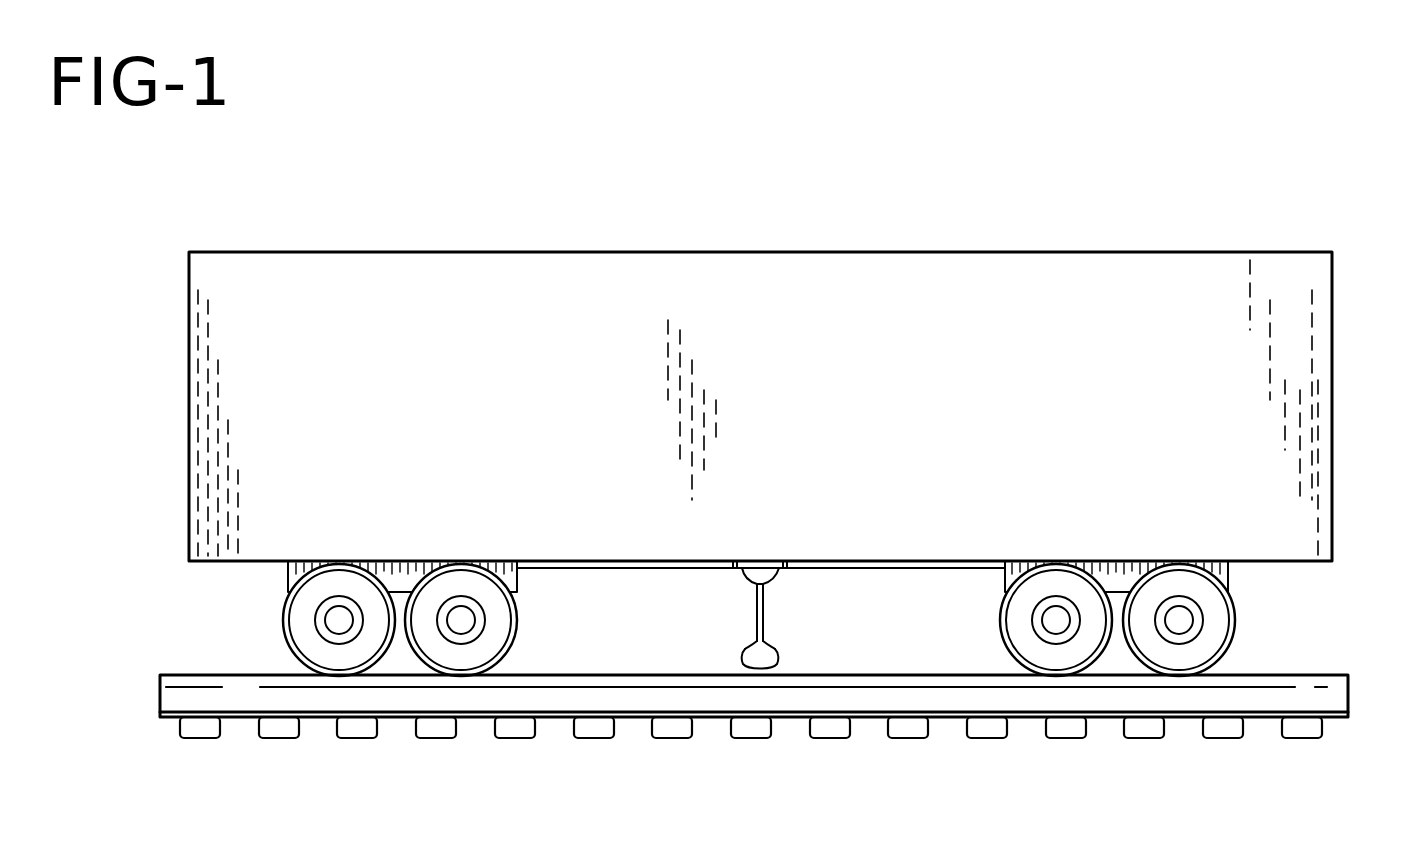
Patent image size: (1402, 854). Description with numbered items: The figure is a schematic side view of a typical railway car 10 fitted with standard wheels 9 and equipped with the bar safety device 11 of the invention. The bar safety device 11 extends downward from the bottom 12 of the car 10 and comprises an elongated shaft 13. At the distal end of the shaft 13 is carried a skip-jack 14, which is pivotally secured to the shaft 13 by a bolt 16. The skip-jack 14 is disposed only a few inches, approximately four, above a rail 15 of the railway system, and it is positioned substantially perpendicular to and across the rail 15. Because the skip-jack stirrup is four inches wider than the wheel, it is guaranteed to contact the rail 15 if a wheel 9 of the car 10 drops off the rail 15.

The wheels 9 is at (458, 561).
The railway car 10 is at (1064, 202).
The bar safety device 11 is at (771, 617).
The bottom 12 is at (610, 574).
The elongated shaft 13 is at (757, 606).
The skip-jack 14 is at (742, 652).
The rail 15 is at (907, 674).
The bolt 16 is at (770, 647).